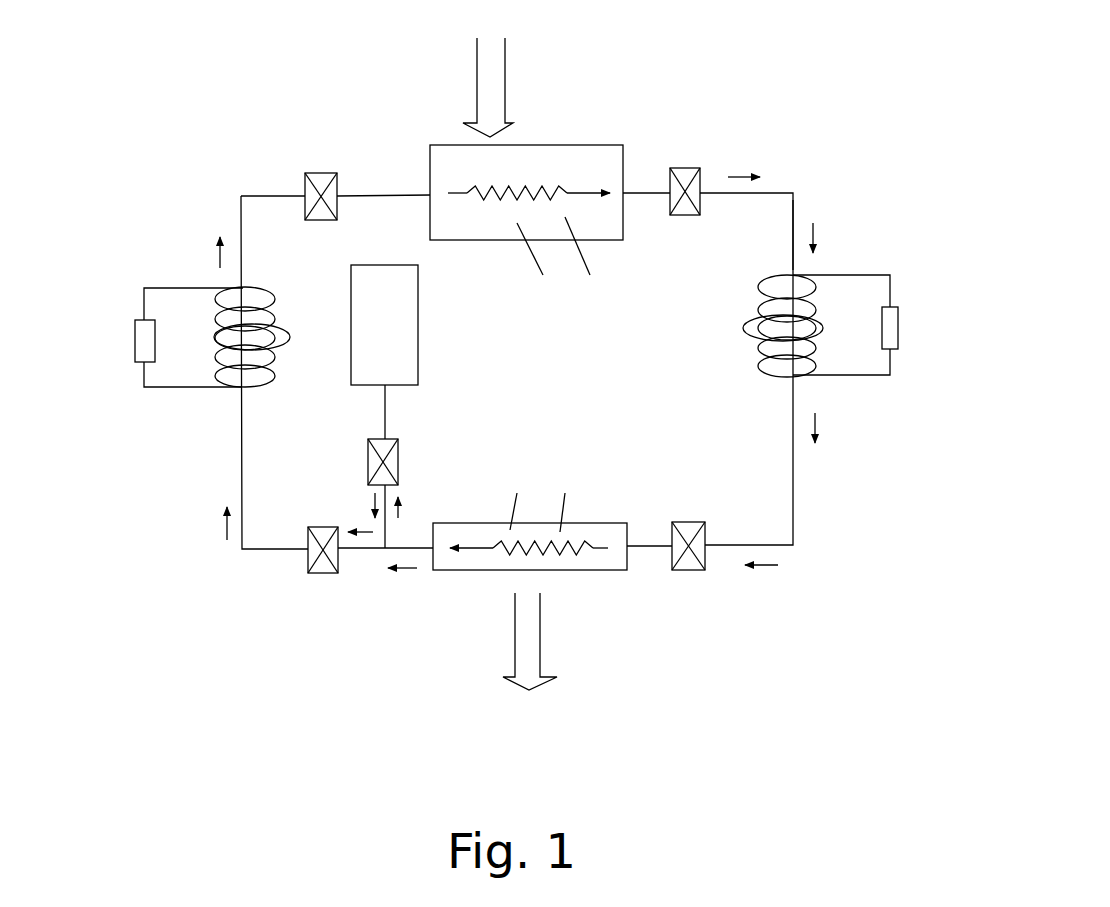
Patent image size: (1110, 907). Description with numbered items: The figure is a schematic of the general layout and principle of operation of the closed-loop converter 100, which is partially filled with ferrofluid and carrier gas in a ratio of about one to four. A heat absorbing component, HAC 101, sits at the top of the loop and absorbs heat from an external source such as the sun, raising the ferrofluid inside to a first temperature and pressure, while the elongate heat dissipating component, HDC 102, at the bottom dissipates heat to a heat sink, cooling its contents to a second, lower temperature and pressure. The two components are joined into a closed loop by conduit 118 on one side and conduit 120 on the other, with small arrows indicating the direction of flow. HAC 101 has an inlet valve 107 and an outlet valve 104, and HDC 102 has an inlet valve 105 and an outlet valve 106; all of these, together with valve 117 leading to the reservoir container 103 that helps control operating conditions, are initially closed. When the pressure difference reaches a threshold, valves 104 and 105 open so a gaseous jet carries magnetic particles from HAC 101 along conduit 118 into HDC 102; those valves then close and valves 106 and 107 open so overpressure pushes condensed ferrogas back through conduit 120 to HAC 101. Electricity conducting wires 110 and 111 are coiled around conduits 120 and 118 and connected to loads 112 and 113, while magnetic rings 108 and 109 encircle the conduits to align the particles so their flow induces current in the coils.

The converter 100 is at (328, 692).
The HAC 101 is at (453, 145).
The HDC 102 is at (448, 572).
The reservoir container 103 is at (418, 288).
The HAC outlet valve 104 is at (685, 167).
The HDC inlet valve 105 is at (705, 550).
The HDC outlet valve 106 is at (320, 573).
The HAC inlet valve 107 is at (312, 173).
The magnetic ring 108 is at (282, 348).
The magnetic ring 109 is at (753, 342).
The electricity conducting wire 110 is at (255, 290).
The electricity conducting wire 111 is at (790, 377).
The load 112 is at (135, 338).
The load 113 is at (898, 328).
The valve 117 is at (400, 462).
The conduit 118 is at (790, 238).
The conduit 120 is at (240, 480).